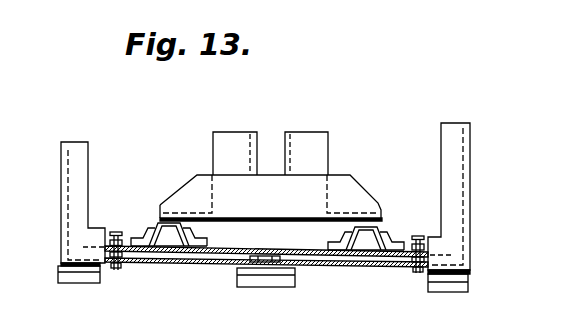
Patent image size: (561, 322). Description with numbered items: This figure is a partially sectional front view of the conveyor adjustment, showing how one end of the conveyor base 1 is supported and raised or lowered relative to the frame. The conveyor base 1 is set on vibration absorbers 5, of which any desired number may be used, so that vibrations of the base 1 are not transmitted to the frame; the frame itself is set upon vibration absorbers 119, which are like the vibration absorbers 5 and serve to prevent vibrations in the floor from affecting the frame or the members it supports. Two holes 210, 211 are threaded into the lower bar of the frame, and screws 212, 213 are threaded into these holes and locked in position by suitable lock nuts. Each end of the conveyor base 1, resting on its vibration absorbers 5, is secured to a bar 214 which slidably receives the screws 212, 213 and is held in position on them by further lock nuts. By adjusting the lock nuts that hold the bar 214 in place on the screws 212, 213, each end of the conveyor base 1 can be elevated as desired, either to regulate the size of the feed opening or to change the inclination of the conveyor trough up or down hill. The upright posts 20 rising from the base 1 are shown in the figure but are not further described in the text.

The conveyor base 1 is at (350, 195).
The posts 20 is at (322, 149).
The vibration absorbers 5 is at (195, 238).
The vibration absorbers 119 is at (93, 281).
The hole 210 is at (126, 262).
The hole 211 is at (412, 272).
The screw 212 is at (118, 232).
The screw 213 is at (419, 236).
The bar 214 is at (283, 251).